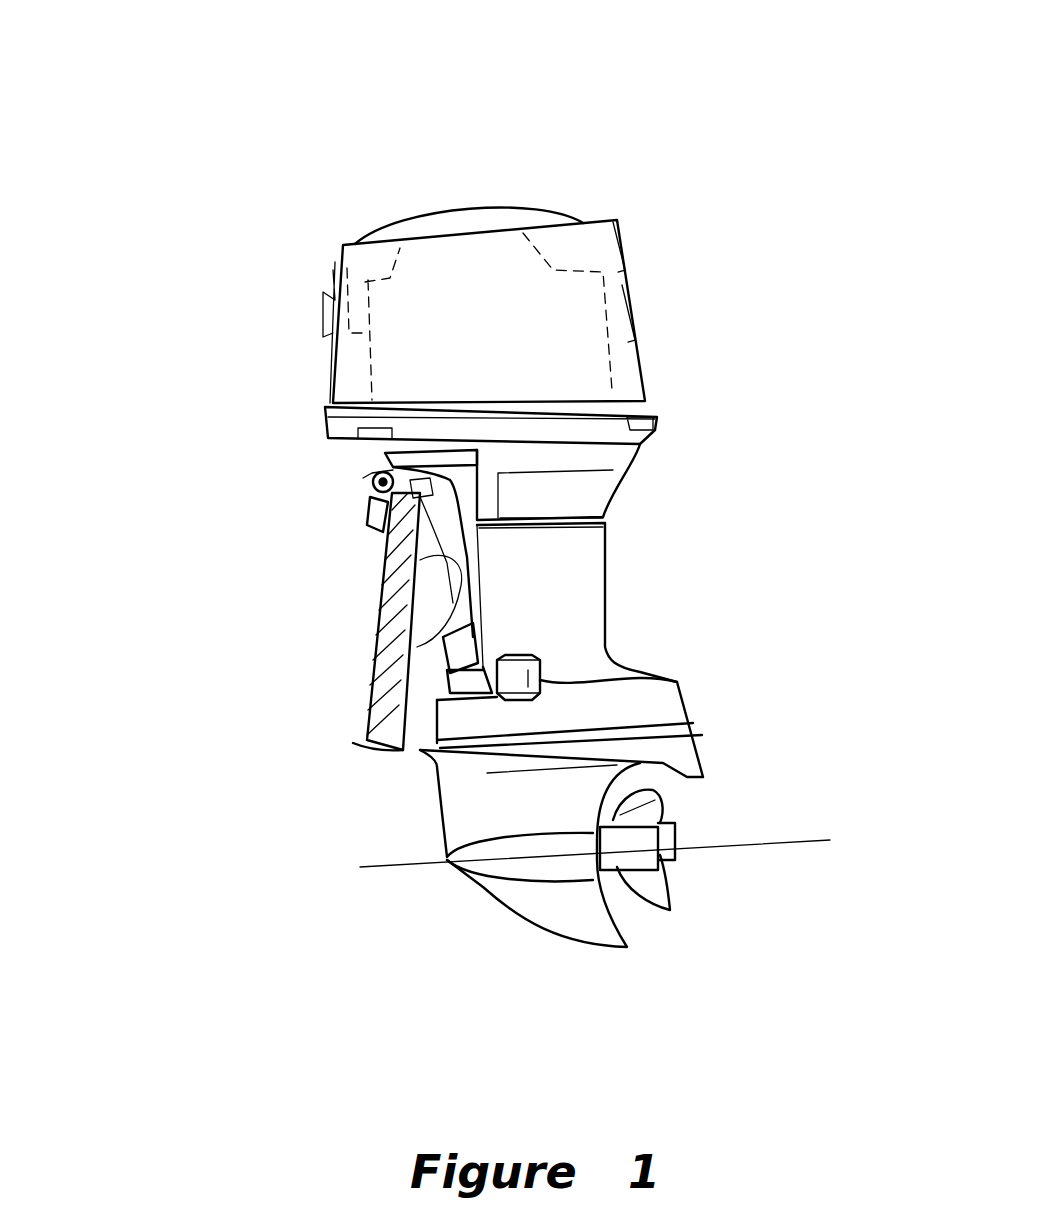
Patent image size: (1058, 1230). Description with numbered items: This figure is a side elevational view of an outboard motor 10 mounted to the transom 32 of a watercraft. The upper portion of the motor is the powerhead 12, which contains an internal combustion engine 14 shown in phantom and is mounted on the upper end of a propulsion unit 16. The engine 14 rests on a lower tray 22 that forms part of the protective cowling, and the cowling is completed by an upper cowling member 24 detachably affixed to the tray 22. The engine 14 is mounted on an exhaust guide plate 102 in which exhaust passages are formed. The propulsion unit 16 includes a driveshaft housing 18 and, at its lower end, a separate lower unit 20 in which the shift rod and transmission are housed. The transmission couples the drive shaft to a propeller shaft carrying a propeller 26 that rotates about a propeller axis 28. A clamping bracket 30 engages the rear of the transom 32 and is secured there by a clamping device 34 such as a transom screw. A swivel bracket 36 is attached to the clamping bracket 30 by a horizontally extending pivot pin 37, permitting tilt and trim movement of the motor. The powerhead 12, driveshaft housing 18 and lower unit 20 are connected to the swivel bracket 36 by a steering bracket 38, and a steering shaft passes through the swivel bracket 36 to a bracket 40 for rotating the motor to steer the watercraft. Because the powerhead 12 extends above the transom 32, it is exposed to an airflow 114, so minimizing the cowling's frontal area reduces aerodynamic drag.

The outboard motor 10 is at (873, 103).
The powerhead 12 is at (597, 200).
The internal combustion engine 14 is at (613, 375).
The propulsion unit 16 is at (615, 570).
The driveshaft housing 18 is at (595, 618).
The lower unit 20 is at (450, 790).
The lower tray 22 is at (625, 437).
The upper cowling member 24 is at (628, 280).
The propeller 26 is at (638, 900).
The propeller axis 28 is at (790, 845).
The clamping bracket 30 is at (427, 558).
The transom 32 is at (375, 620).
The clamping device 34 is at (370, 510).
The swivel bracket 36 is at (462, 617).
The pivot pin 37 is at (370, 477).
The steering bracket 38 is at (390, 468).
The bracket 40 is at (547, 678).
The exhaust guide plate 102 is at (567, 437).
The airflow 114 is at (177, 280).